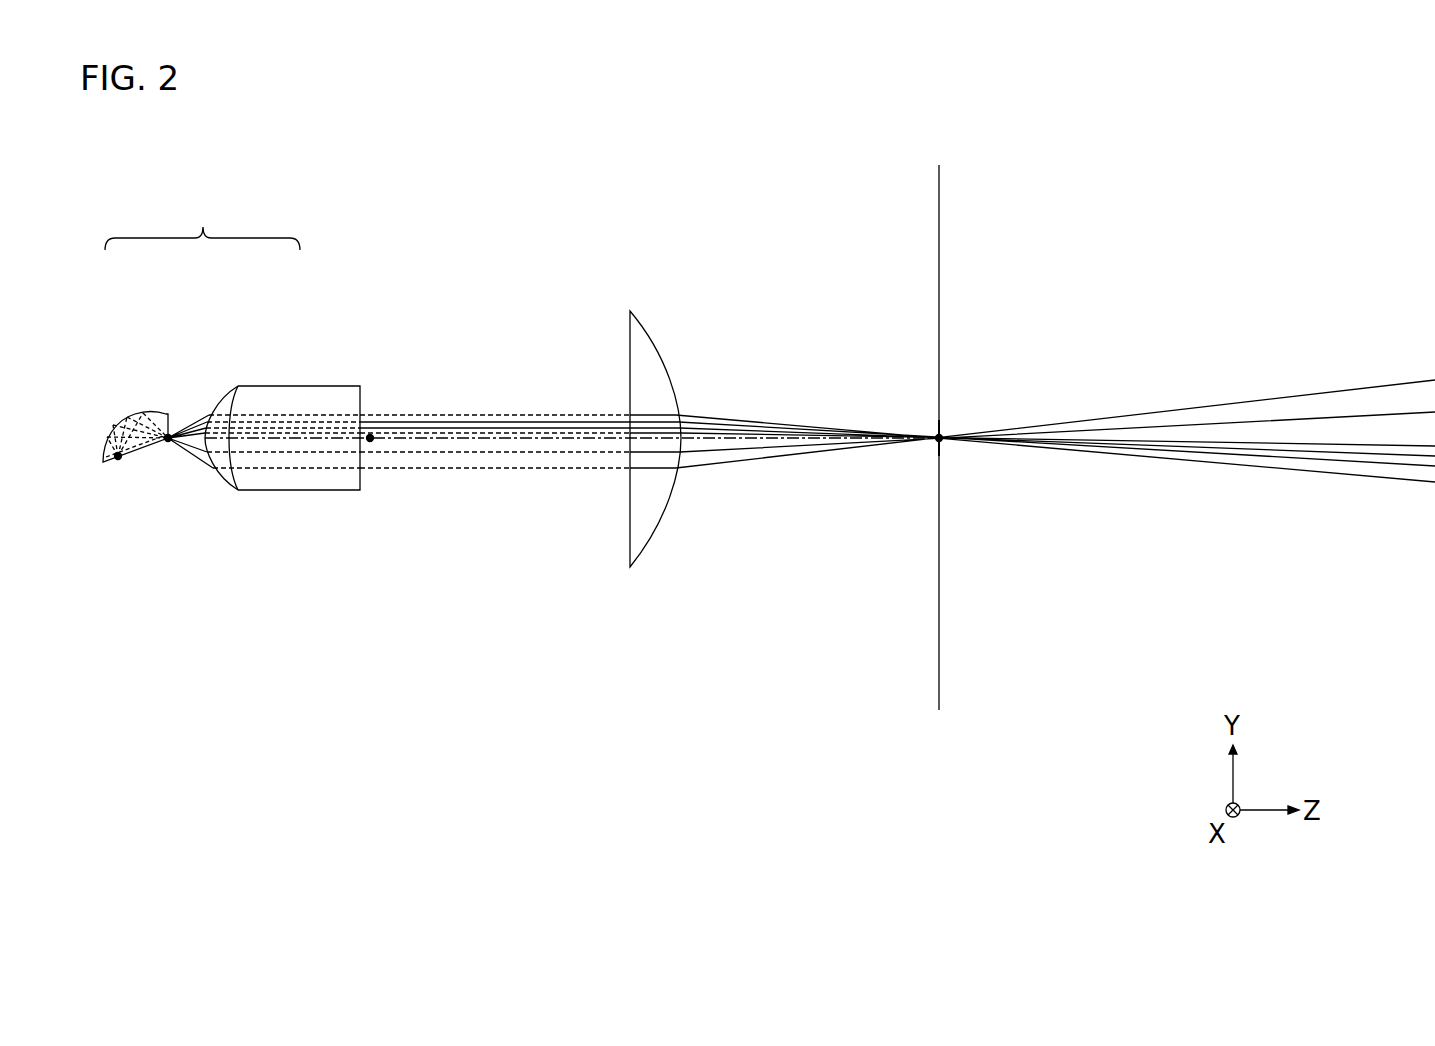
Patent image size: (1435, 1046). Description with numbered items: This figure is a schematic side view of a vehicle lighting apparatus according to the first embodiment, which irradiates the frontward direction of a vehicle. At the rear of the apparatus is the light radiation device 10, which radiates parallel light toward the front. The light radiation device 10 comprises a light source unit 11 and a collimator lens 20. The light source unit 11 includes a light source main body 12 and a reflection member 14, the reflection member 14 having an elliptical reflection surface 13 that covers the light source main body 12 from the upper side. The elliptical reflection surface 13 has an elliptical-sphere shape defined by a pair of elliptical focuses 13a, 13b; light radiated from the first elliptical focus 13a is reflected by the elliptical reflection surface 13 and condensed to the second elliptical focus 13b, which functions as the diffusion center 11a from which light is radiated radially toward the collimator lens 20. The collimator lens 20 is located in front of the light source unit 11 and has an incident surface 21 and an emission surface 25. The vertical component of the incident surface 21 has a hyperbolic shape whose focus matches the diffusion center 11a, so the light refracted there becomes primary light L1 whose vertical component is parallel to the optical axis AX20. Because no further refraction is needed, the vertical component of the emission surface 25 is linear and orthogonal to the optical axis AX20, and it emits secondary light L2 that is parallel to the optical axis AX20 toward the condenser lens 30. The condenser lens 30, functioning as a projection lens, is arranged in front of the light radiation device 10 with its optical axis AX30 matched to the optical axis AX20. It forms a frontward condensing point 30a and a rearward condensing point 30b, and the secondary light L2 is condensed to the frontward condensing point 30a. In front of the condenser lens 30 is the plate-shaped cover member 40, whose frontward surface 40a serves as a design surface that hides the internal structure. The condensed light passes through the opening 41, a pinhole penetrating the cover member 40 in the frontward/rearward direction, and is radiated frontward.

The light radiation device 10 is at (202, 223).
The light source unit 11 is at (170, 413).
The diffusion center 11a is at (206, 513).
The light source main body 12 is at (118, 462).
The elliptical reflection surface 13 is at (153, 418).
The first elliptical focus 13a is at (122, 470).
The second elliptical focus 13b is at (168, 445).
The reflection member 14 is at (116, 428).
The collimator lens 20 is at (404, 395).
The incident surface 21 is at (234, 482).
The emission surface 25 is at (362, 491).
The primary light L1 is at (317, 415).
The optical axis of the collimator lens AX20 is at (400, 440).
The secondary light L2 is at (433, 416).
The condenser lens 30 is at (641, 308).
The frontward condensing point 30a is at (935, 435).
The rearward condensing point 30b is at (371, 434).
The optical axis of the condenser lens AX30 is at (716, 440).
The cover member 40 is at (984, 408).
The frontward surface 40a is at (940, 200).
The opening 41 is at (942, 430).